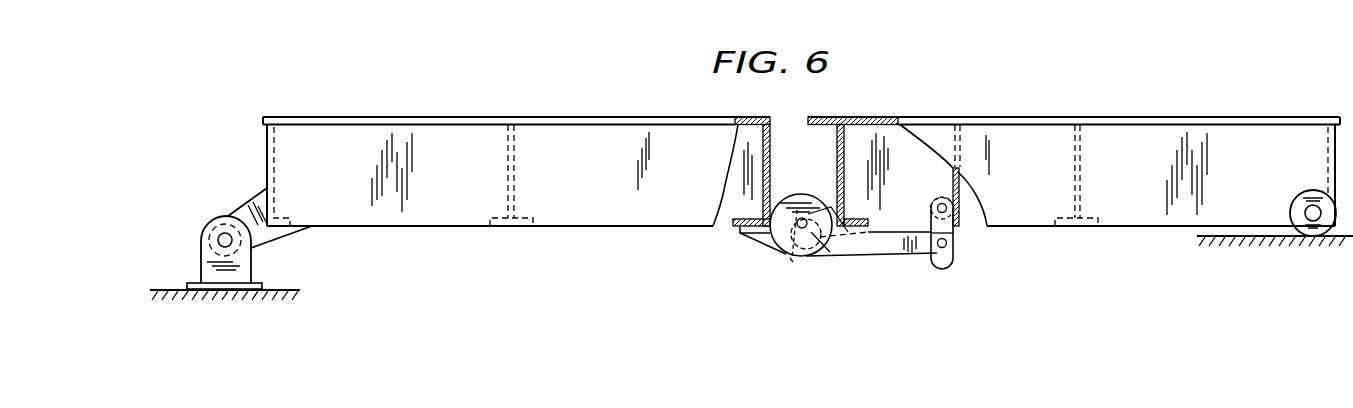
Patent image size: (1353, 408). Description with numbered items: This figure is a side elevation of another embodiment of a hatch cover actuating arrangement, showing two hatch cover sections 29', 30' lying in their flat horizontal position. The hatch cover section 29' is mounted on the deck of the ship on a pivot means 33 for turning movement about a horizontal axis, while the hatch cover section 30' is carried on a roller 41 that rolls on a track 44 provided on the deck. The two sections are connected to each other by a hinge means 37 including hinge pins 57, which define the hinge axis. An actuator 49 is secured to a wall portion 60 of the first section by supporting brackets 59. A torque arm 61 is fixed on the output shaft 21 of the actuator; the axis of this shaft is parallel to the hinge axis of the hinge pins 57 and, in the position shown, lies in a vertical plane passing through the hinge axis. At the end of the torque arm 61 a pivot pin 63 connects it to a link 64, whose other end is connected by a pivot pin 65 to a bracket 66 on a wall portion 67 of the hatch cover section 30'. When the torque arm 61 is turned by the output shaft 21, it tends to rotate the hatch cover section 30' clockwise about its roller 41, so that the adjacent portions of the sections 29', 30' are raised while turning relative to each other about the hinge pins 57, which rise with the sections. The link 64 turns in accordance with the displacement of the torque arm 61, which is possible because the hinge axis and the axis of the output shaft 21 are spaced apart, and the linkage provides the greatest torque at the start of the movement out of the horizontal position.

The hatch cover section 29' is at (516, 158).
The hatch cover section 30' is at (1074, 158).
The output shaft 21 is at (806, 216).
The pivot means 33 is at (236, 294).
The hinge means 37 is at (763, 247).
The roller 41 is at (1312, 192).
The track 44 is at (1244, 237).
The actuator 49 is at (797, 198).
The hinge pins 57 is at (790, 263).
The supporting brackets 59 is at (770, 187).
The wall portion 60 is at (770, 147).
The torque arm 61 is at (916, 257).
The pivot pin 63 is at (945, 252).
The link 64 is at (950, 233).
The pivot pin 65 is at (937, 210).
The bracket 66 is at (953, 200).
The wall portion 67 is at (962, 151).